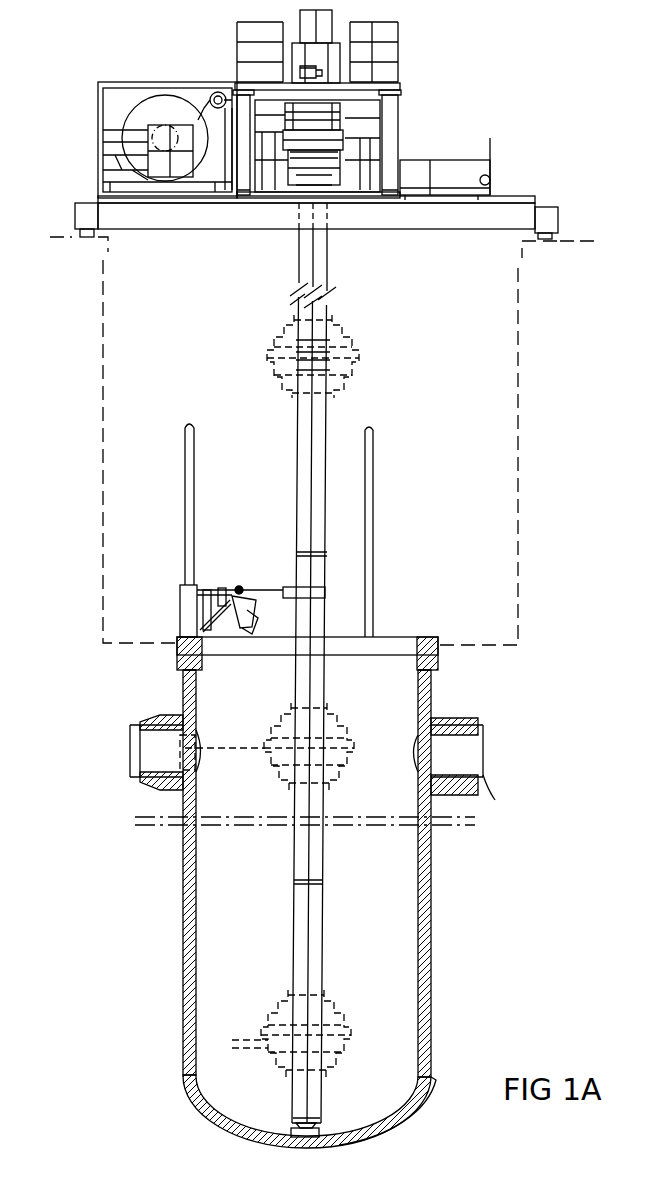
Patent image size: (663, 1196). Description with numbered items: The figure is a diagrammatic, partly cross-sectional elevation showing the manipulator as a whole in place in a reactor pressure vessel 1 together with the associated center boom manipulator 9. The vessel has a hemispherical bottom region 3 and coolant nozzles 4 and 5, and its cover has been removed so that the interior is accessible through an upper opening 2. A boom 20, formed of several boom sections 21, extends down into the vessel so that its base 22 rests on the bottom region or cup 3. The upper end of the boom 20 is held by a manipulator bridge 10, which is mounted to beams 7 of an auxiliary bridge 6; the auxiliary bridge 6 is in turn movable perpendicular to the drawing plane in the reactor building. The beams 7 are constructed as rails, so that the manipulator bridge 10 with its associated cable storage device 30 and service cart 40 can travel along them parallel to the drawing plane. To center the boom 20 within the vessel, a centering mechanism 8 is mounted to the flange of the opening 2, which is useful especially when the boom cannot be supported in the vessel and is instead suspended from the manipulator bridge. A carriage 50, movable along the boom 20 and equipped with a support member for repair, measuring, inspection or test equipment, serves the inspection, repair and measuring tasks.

The reactor pressure vessel 1 is at (432, 884).
The upper opening 2 is at (390, 637).
The hemispherical bottom region 3 is at (398, 1100).
The coolant nozzle 4 is at (134, 780).
The coolant nozzle 5 is at (485, 783).
The auxiliary bridge 6 is at (76, 213).
The beams 7 is at (150, 222).
The centering mechanism 8 is at (238, 587).
The center boom manipulator 9 is at (272, 352).
The manipulator bridge 10 is at (398, 115).
The boom 20 is at (330, 416).
The boom sections 21 is at (323, 602).
The base 22 is at (345, 1137).
The cable storage device 30 is at (162, 108).
The service cart 40 is at (446, 175).
The carriage 50 is at (285, 195).